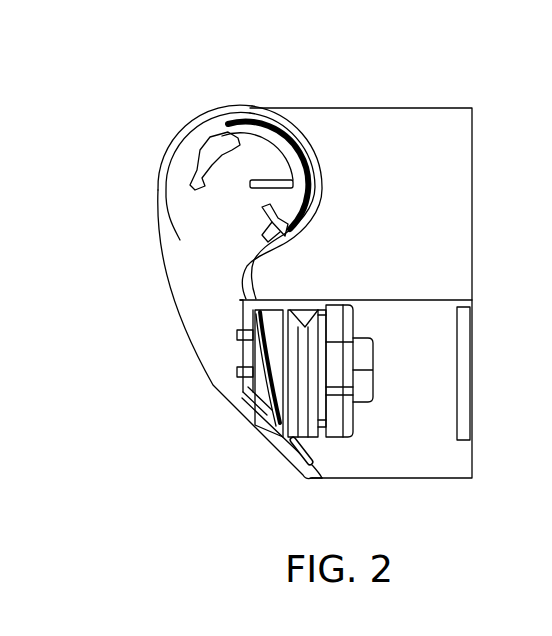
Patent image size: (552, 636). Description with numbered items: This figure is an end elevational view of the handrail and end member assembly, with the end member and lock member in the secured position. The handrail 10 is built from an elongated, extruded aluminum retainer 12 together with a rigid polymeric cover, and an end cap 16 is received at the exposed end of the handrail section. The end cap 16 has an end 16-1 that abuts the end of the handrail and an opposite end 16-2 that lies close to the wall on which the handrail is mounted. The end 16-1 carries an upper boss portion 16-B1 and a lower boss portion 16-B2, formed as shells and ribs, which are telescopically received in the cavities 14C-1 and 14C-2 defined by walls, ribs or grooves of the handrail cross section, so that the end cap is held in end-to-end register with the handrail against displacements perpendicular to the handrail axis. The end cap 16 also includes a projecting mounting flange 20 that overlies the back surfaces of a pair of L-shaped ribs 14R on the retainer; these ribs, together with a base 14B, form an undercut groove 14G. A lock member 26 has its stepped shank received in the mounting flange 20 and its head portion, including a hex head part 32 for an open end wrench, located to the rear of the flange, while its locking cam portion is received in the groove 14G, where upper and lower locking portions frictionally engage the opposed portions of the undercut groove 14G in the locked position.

The handrail 10 is at (238, 106).
The retainer 12 is at (204, 122).
The base 14B is at (300, 372).
The cavity 14C-1 is at (290, 133).
The cavity 14C-2 is at (262, 392).
The undercut groove 14G is at (300, 446).
The L-shaped ribs 14R is at (334, 300).
The end cap 16 is at (393, 108).
The end 16-1 is at (185, 230).
The end 16-2 is at (470, 410).
The upper boss portion 16-B1 is at (256, 128).
The lower boss portion 16-B2 is at (265, 365).
The mounting flange 20 is at (337, 317).
The lock member 26 is at (357, 320).
The hex head part 32 is at (373, 387).